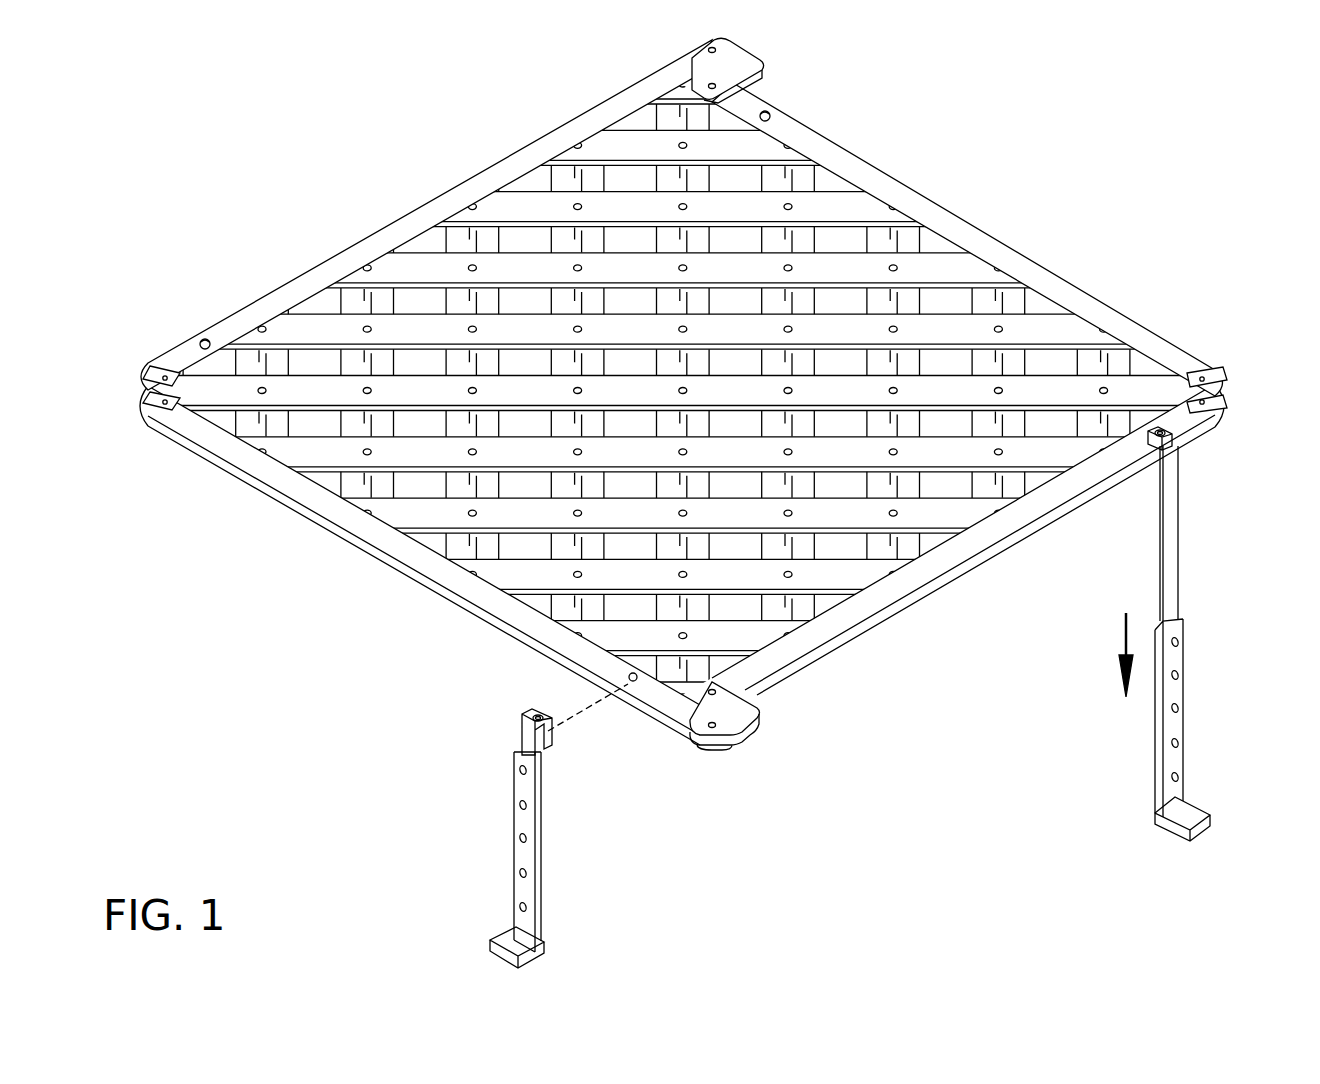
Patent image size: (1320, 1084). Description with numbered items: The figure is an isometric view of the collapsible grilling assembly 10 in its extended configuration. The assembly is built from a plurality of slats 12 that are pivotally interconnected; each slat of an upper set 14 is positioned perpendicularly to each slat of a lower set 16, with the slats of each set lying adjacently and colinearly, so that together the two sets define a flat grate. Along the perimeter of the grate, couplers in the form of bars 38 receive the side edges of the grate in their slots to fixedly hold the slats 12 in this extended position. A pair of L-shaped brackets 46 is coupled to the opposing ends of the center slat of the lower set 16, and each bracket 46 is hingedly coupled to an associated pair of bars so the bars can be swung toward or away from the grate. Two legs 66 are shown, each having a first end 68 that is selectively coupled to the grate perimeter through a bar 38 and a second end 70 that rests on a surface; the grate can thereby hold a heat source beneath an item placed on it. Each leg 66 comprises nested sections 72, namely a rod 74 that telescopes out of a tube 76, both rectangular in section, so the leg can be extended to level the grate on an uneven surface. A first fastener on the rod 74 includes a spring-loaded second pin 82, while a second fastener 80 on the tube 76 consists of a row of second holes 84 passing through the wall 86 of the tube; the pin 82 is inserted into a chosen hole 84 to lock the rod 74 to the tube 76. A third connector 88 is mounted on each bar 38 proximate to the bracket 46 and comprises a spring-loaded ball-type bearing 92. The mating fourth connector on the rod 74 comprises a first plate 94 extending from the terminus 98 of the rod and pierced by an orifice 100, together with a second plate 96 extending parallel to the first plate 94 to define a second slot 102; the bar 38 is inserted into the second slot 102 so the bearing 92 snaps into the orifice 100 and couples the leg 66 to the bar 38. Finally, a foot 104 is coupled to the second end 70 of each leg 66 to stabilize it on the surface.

The collapsible grilling assembly 10 is at (1122, 99).
The slats 12 is at (379, 357).
The upper set 14 is at (753, 147).
The lower set 16 is at (665, 489).
The bars 38 is at (815, 119).
The brackets 46 is at (725, 705).
The legs 66 is at (833, 697).
The first end 68 is at (1178, 448).
The second end 70 is at (1156, 813).
The nested sections 72 is at (1177, 549).
The rod 74 is at (1162, 636).
The tube 76 is at (512, 862).
The second fasteners 80 is at (1183, 712).
The second pin 82 is at (534, 909).
The second holes 84 is at (514, 771).
The wall 86 is at (530, 888).
The third connectors 88 is at (771, 114).
The bearing 92 is at (646, 689).
The first plate 94 is at (540, 711).
The second plate 96 is at (549, 748).
The terminus 98 is at (529, 742).
The orifice 100 is at (512, 711).
The second slot 102 is at (552, 734).
The feet 104 is at (1211, 803).